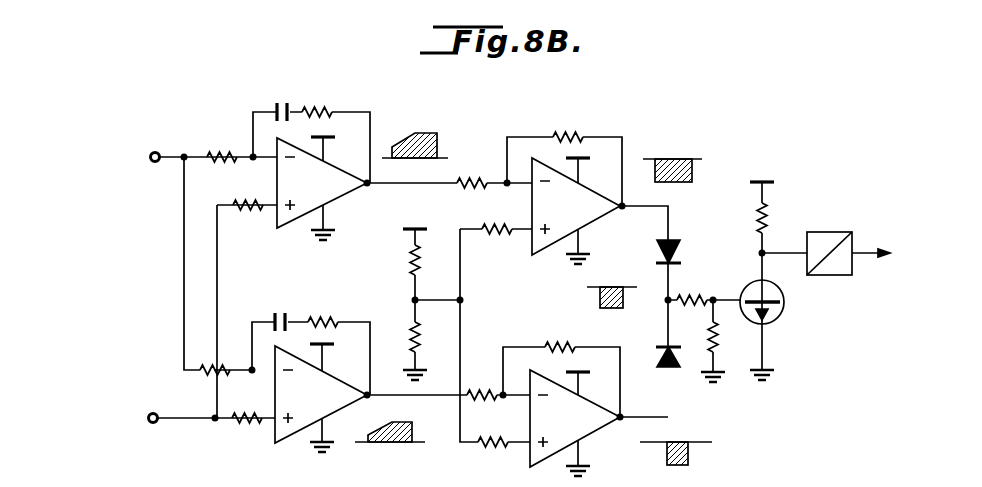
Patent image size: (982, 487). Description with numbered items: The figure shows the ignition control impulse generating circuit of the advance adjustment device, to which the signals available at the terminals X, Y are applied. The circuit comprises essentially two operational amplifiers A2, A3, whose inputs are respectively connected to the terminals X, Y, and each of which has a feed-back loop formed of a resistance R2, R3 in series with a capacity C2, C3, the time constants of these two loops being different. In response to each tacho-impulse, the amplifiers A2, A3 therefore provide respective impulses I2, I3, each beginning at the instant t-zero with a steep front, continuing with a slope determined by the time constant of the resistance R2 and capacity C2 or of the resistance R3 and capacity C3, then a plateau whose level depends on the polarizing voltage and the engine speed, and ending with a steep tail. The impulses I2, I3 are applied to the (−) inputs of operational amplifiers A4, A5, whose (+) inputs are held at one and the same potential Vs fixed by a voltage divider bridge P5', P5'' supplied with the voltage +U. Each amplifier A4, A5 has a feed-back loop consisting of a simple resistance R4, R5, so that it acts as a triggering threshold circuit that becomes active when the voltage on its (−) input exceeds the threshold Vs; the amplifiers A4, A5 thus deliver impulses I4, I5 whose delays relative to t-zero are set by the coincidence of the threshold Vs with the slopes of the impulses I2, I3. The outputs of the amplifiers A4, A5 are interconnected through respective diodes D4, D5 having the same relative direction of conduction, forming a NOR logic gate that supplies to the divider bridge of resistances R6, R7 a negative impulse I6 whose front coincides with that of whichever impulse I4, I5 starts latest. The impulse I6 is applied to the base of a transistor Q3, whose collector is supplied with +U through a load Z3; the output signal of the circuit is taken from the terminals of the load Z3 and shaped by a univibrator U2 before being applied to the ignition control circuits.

The operational amplifier A2 is at (322, 179).
The operational amplifier A3 is at (321, 390).
The operational amplifier A4 is at (576, 203).
The operational amplifier A5 is at (575, 415).
The capacity C2 is at (279, 103).
The capacity C3 is at (277, 313).
The resistance R2 is at (317, 101).
The resistance R3 is at (322, 311).
The resistance R4 is at (568, 122).
The resistance R5 is at (560, 336).
The resistance R6 is at (692, 288).
The resistance R7 is at (721, 341).
The voltage divider bridge section P5' is at (405, 256).
The voltage divider bridge section P5'' is at (403, 340).
The diode D4 is at (654, 250).
The diode D5 is at (656, 346).
The load Z3 is at (753, 207).
The transistor Q3 is at (775, 316).
The univibrator U2 is at (822, 232).
The impulse I2 is at (417, 133).
The impulse I3 is at (367, 442).
The impulse I4 is at (680, 167).
The impulse I5 is at (689, 452).
The negative impulse I6 is at (595, 288).
The threshold potential Vs is at (464, 300).
The terminal X is at (142, 158).
The terminal Y is at (141, 419).